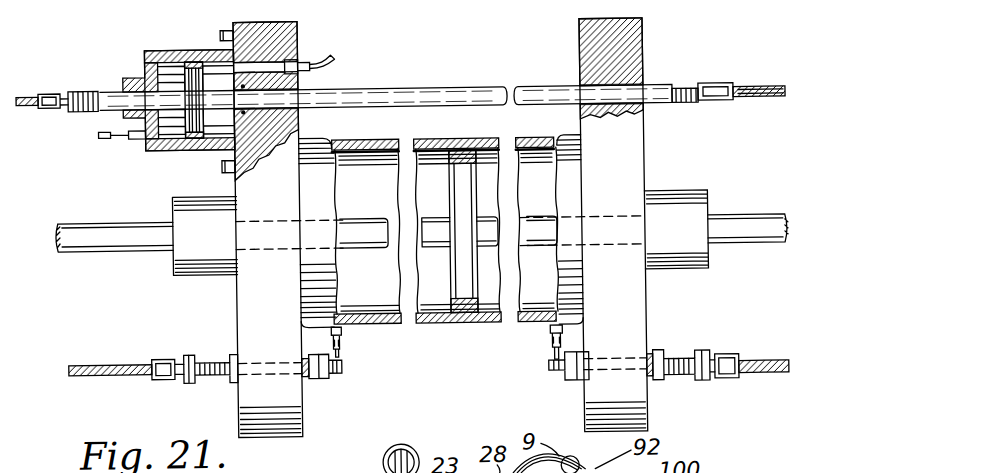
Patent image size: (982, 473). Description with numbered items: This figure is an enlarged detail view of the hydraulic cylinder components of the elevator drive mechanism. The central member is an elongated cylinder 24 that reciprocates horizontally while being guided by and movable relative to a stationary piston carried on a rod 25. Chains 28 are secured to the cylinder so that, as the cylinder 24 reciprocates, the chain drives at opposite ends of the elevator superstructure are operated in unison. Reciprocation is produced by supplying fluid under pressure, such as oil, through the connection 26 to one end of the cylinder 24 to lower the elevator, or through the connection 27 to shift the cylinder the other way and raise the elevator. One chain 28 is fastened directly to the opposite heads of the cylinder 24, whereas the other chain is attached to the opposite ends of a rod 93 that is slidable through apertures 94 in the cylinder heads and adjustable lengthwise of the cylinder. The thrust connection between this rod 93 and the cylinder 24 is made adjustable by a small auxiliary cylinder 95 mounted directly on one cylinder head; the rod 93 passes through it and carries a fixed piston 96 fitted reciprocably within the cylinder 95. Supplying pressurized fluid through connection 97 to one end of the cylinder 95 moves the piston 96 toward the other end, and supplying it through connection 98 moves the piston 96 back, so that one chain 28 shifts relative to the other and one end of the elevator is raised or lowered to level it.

The elongated cylinder 24 is at (372, 138).
The rod 25 is at (106, 236).
The connection 26 is at (341, 343).
The connection 27 is at (548, 342).
The chains 28 is at (33, 88).
The rod 93 is at (467, 88).
The apertures 94 is at (310, 86).
The auxiliary cylinder 95 is at (175, 49).
The piston 96 is at (187, 124).
The connection 97 is at (100, 131).
The connection 98 is at (326, 52).